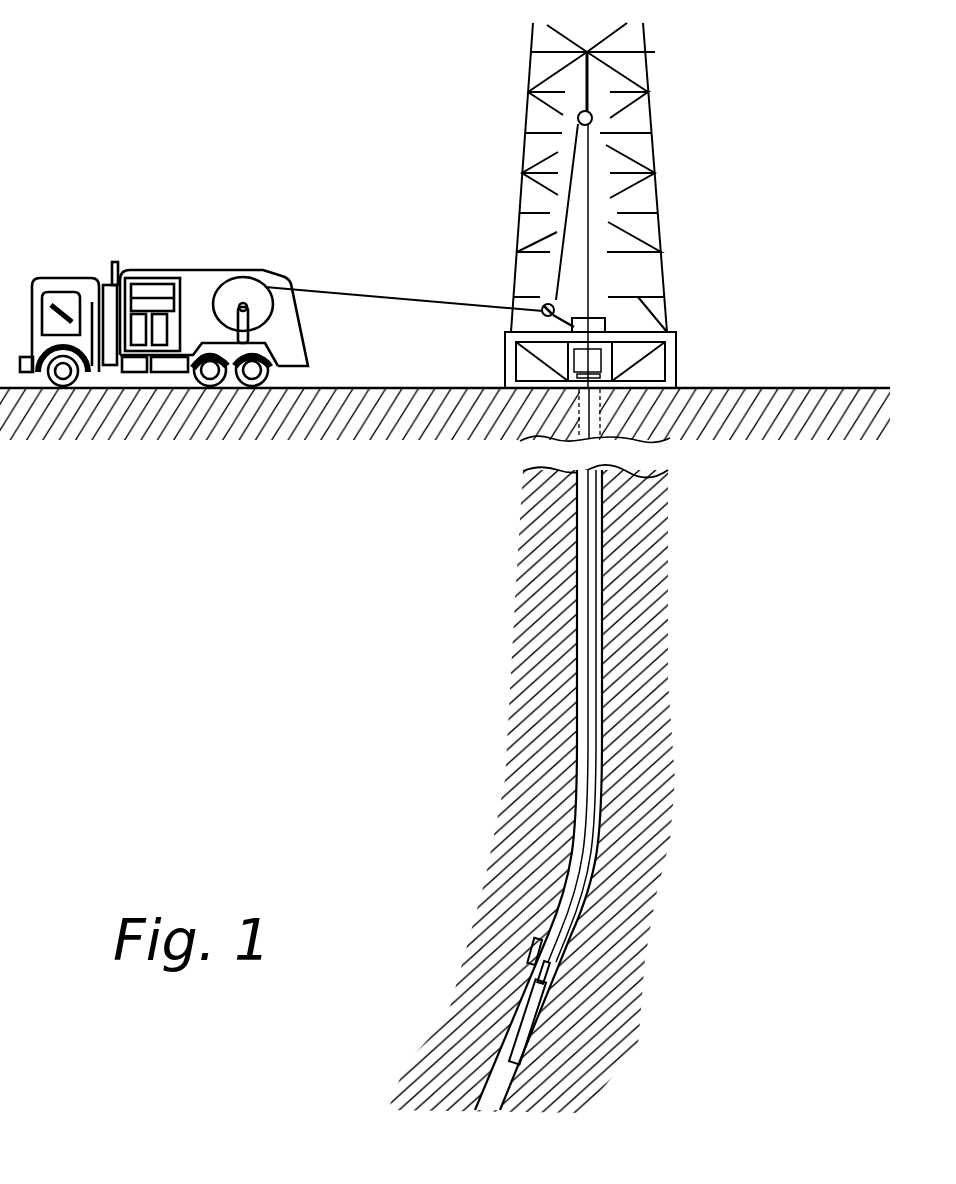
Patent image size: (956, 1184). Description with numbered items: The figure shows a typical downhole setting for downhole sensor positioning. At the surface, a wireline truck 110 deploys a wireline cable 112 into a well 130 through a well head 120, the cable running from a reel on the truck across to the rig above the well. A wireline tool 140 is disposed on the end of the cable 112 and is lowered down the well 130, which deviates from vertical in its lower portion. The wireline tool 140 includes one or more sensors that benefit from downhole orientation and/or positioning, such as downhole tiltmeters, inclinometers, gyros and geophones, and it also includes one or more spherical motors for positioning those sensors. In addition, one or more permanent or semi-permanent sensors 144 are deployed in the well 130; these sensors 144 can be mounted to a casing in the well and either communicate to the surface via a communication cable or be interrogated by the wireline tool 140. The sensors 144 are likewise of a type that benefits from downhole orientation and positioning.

The wireline truck 110 is at (214, 270).
The wireline cable 112 is at (376, 297).
The well head 120 is at (719, 313).
The well 130 is at (573, 535).
The wireline tool 140 is at (535, 1018).
The sensors 144 is at (532, 944).